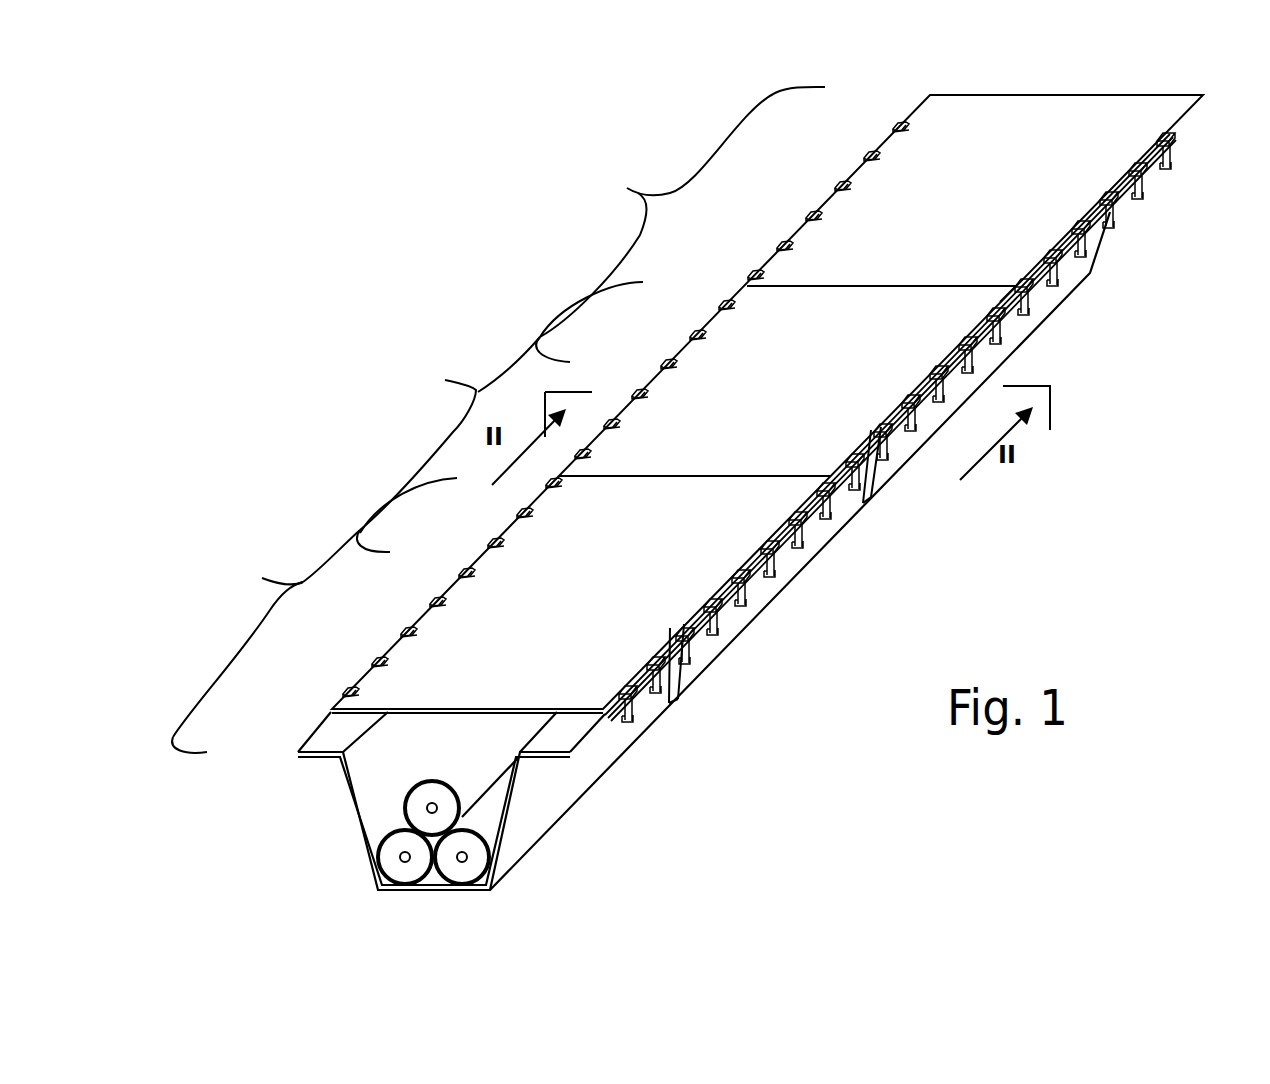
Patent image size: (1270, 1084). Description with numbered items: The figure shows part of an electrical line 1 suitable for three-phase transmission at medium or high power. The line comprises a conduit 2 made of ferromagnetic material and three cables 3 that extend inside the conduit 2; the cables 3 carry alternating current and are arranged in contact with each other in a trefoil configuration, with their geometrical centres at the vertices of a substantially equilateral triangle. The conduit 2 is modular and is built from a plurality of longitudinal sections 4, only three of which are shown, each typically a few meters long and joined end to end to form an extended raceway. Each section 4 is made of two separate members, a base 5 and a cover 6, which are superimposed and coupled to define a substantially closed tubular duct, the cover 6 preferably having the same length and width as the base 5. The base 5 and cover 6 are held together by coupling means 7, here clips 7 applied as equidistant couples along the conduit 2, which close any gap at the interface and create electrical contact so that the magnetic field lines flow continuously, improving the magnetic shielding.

The electrical line 1 is at (545, 221).
The conduit 2 is at (868, 521).
The cables 3 is at (455, 877).
The longitudinal sections 4 is at (498, 420).
The base 5 is at (643, 717).
The cover 6 is at (610, 625).
The coupling means 7 is at (1033, 275).